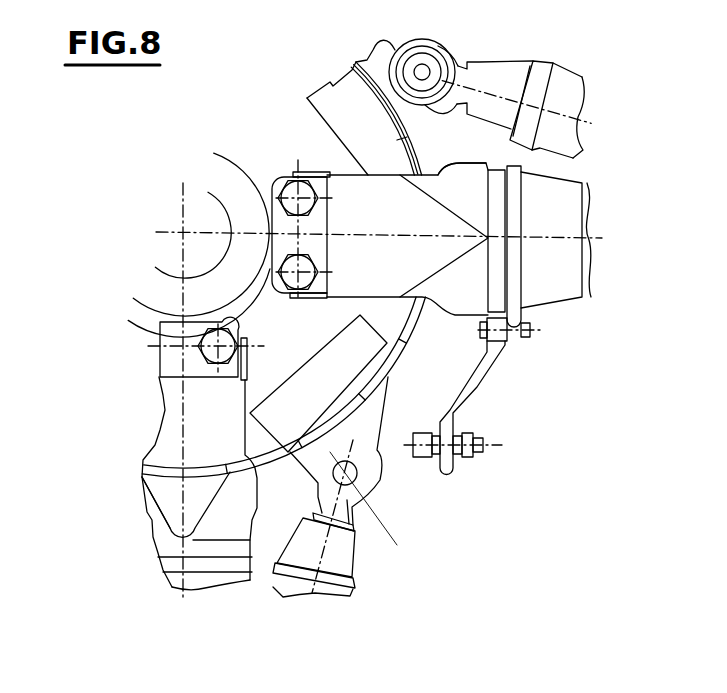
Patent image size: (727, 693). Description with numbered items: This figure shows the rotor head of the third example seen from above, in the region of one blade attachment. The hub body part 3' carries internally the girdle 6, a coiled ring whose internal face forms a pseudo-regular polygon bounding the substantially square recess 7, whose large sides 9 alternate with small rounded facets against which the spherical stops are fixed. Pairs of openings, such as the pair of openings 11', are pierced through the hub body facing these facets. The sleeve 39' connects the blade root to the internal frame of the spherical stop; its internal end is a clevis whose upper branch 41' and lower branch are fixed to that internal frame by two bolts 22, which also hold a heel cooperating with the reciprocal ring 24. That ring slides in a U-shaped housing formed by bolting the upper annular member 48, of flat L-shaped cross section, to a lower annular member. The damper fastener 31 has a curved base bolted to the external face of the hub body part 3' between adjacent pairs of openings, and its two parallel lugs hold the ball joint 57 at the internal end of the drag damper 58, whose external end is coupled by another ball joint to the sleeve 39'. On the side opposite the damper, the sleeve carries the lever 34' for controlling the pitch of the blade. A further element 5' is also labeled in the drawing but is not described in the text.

The hub body part 3' is at (294, 387).
The anchor boss 5' is at (132, 502).
The girdle 6 is at (337, 88).
The recess 7 is at (299, 347).
The large sides 9 is at (290, 393).
The openings 11' is at (447, 153).
The bolts 22 is at (310, 265).
The reciprocal ring 24 is at (247, 172).
The damper fastener 31 is at (386, 45).
The lever 34' is at (480, 408).
The sleeve 39' is at (535, 262).
The branch 41' is at (293, 376).
The upper annular member 48 is at (218, 183).
The ball joint 57 is at (436, 55).
The drag damper 58 is at (565, 88).